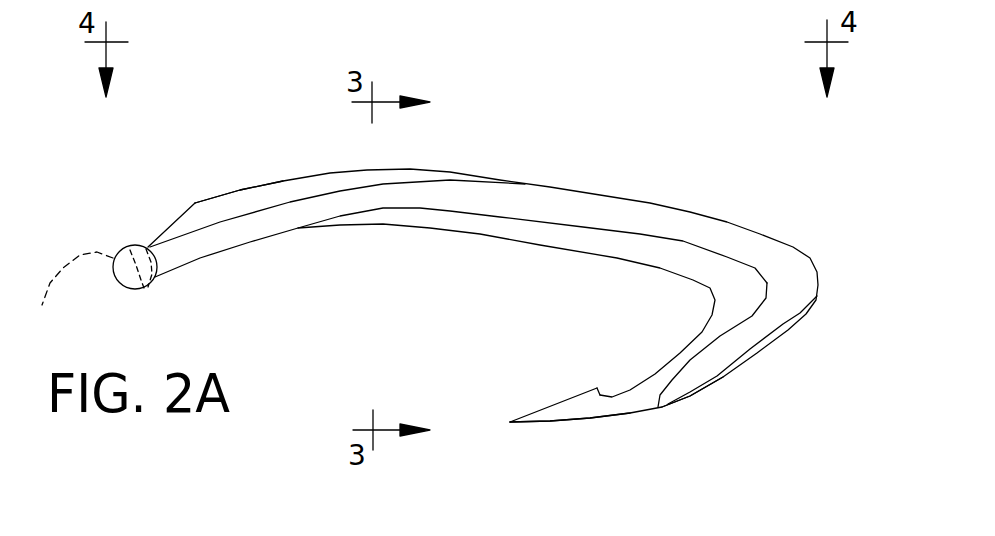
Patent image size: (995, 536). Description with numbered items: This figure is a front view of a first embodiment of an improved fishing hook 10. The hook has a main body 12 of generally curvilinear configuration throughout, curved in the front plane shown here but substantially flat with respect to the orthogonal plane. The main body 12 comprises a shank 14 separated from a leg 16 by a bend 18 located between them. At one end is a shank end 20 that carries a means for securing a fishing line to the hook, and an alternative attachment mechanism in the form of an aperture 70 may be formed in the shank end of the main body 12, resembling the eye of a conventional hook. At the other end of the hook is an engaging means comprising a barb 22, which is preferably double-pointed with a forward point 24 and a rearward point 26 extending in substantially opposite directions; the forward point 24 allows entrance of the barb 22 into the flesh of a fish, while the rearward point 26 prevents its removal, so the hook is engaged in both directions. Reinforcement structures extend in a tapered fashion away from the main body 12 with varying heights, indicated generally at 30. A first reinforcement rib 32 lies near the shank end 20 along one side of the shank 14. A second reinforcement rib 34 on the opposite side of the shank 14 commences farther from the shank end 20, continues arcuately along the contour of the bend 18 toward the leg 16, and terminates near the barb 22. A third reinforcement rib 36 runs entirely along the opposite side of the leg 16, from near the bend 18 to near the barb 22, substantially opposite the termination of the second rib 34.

The fishing hook 10 is at (627, 115).
The main body 12 is at (728, 194).
The shank 14 is at (323, 210).
The leg 16 is at (732, 338).
The bend 18 is at (788, 265).
The shank end 20 is at (123, 247).
The barb 22 is at (590, 408).
The forward point 24 is at (512, 420).
The rearward point 26 is at (593, 390).
The beveled region 30 is at (278, 160).
The first reinforcement rib 32 is at (222, 208).
The second reinforcement rib 34 is at (627, 245).
The third reinforcement rib 36 is at (697, 380).
The aperture 70 is at (70, 294).